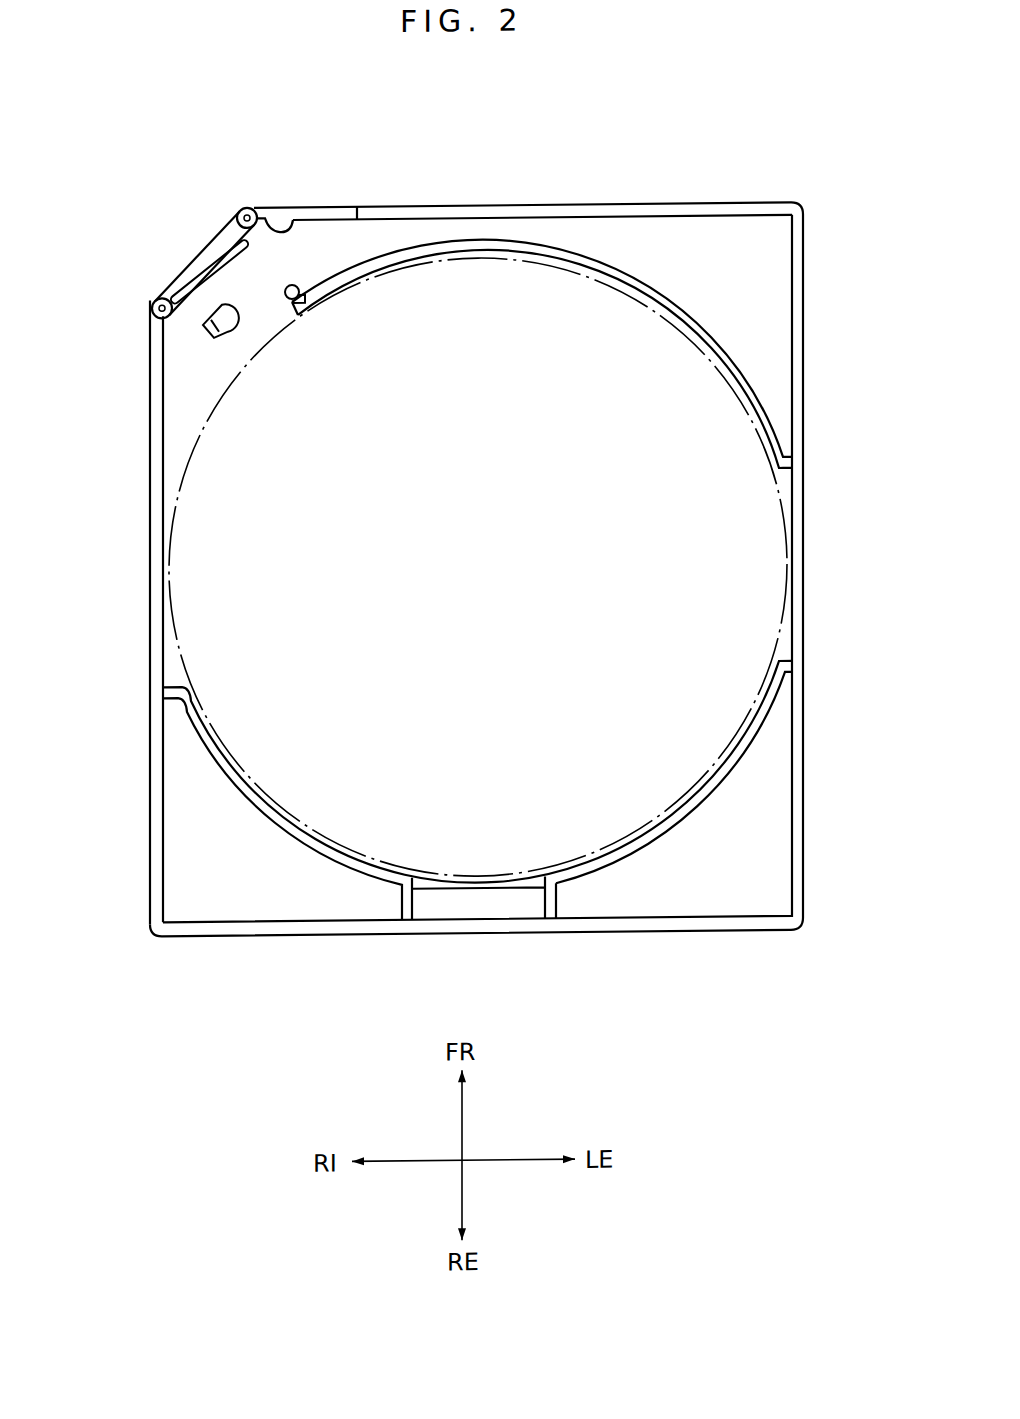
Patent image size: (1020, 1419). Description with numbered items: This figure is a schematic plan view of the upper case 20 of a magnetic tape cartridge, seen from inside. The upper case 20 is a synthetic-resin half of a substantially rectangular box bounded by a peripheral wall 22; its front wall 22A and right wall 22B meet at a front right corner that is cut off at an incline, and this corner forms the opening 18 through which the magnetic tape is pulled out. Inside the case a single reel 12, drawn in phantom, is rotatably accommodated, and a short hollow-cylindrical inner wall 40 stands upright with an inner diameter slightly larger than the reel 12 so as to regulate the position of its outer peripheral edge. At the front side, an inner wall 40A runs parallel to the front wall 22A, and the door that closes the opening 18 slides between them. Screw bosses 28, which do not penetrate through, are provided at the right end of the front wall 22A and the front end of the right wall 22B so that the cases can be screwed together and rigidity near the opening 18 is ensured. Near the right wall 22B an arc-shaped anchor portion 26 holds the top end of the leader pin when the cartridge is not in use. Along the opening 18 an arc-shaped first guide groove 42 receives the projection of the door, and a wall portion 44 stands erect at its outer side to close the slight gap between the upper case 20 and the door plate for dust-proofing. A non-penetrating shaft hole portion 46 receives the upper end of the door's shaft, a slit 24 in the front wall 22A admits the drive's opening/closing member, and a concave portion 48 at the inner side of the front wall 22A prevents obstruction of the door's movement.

The reel 12 is at (780, 638).
The opening 18 is at (170, 226).
The upper case 20 is at (678, 130).
The peripheral wall 22 is at (812, 557).
The front wall 22A is at (442, 210).
The right wall 22B is at (150, 556).
The slit 24 is at (357, 210).
The anchor portion 26 is at (204, 333).
The screw boss 28 is at (276, 208).
The inner wall 40 is at (707, 804).
The inner wall 40A is at (594, 266).
The first guide groove 42 is at (225, 229).
The wall portion 44 is at (183, 275).
The shaft hole portion 46 is at (293, 288).
The concave portion 48 is at (246, 210).